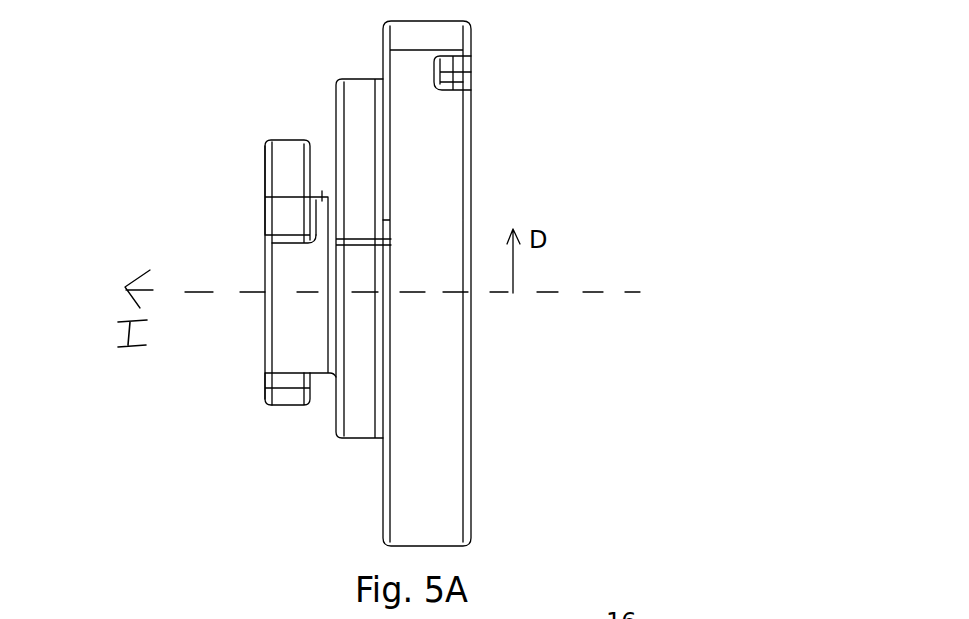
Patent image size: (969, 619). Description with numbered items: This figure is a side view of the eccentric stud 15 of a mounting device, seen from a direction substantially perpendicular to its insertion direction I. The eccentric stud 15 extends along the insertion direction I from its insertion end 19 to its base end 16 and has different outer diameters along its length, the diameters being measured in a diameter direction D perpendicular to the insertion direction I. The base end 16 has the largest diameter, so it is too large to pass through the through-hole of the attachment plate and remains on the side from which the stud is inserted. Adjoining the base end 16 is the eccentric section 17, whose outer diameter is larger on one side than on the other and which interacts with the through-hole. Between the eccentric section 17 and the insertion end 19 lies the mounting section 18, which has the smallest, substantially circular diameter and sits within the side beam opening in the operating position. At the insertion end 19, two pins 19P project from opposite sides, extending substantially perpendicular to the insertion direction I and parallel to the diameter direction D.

The eccentric stud 15 is at (608, 121).
The base end 16 is at (453, 160).
The eccentric section 17 is at (362, 423).
The mounting section 18 is at (322, 200).
The insertion end 19 is at (282, 270).
The pin 19P is at (281, 160).